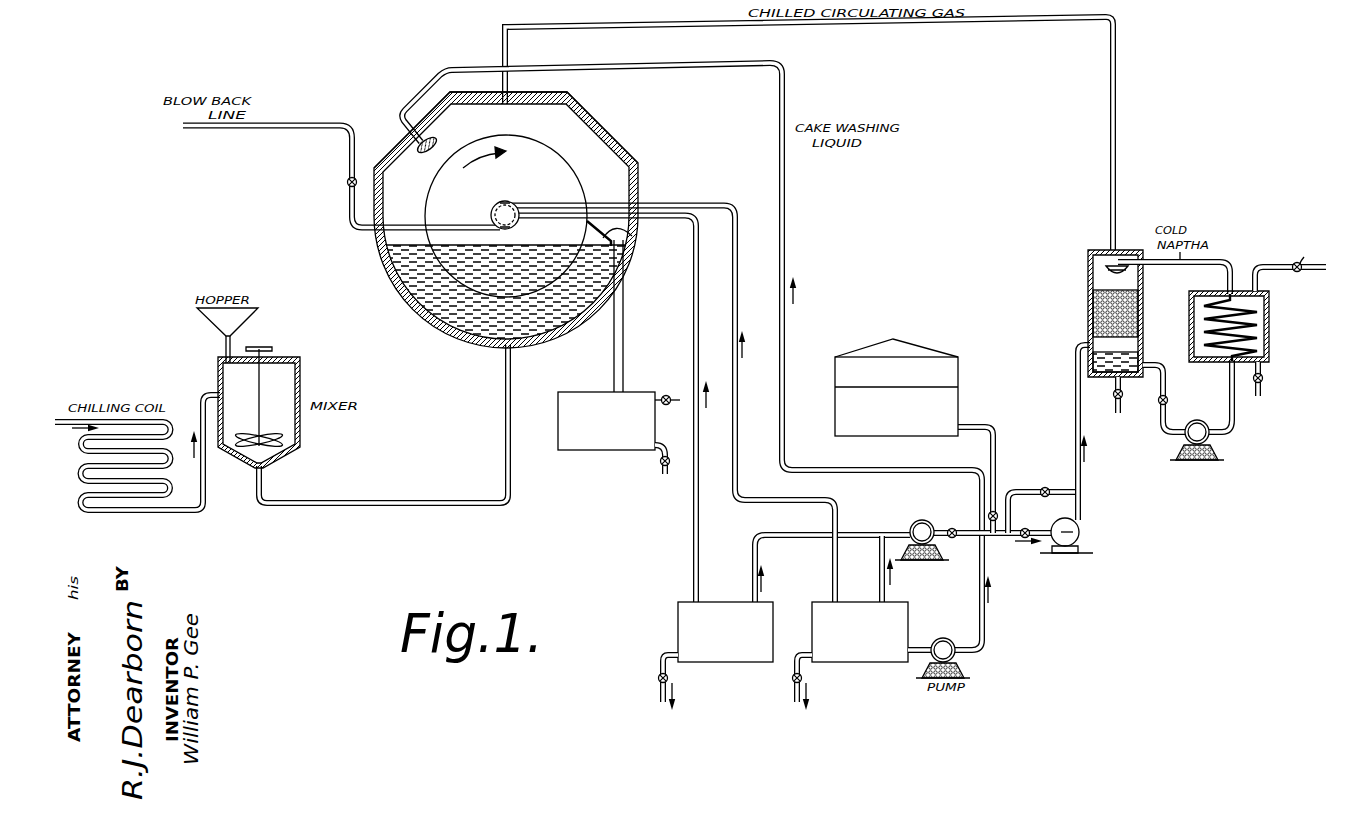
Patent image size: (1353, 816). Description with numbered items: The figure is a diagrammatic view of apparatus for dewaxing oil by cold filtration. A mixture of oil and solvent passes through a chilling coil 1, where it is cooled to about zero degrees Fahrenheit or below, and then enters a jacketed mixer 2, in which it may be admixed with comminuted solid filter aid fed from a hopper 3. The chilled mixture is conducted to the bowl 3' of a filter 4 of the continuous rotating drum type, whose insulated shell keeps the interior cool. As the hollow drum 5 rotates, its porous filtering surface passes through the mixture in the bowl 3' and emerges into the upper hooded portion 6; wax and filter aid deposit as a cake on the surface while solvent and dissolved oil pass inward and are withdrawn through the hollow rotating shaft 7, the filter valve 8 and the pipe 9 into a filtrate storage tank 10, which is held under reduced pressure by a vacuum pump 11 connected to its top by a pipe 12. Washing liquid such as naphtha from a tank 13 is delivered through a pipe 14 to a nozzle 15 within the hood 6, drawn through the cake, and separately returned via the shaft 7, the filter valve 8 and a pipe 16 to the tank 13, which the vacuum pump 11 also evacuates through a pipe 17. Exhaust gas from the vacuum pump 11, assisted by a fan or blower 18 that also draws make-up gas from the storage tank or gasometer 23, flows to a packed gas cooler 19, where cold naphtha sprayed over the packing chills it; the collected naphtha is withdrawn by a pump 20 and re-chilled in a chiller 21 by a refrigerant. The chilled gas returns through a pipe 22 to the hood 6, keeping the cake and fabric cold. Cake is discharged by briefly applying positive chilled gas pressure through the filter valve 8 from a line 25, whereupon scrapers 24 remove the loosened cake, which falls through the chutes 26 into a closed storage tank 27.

The chilling coil 1 is at (118, 474).
The mixer 2 is at (298, 358).
The hopper 3 is at (212, 335).
The bowl 3' is at (383, 411).
The filter 4 is at (410, 300).
The hollow drum 5 is at (570, 176).
The hooded portion 6 is at (584, 140).
The hollow rotating shaft 7 is at (513, 201).
The filter valve 8 is at (490, 218).
The pipe 9 is at (693, 343).
The filtrate storage tank 10 is at (683, 607).
The vacuum pump 11 is at (923, 522).
The pipe 12 is at (787, 538).
The tank 13 is at (902, 607).
The pipe 14 is at (683, 66).
The nozzle 15 is at (438, 137).
The pipe 16 is at (717, 204).
The pipe 17 is at (883, 563).
The fan or blower 18 is at (1077, 530).
The gas cooler 19 is at (1088, 267).
The pump 20 is at (1197, 421).
The chiller 21 is at (1270, 347).
The pipe 22 is at (983, 19).
The storage tank or gasometer 23 is at (945, 370).
The scrapers 24 is at (632, 236).
The line 25 is at (285, 129).
The chutes 26 is at (623, 308).
The closed storage tank 27 is at (571, 398).